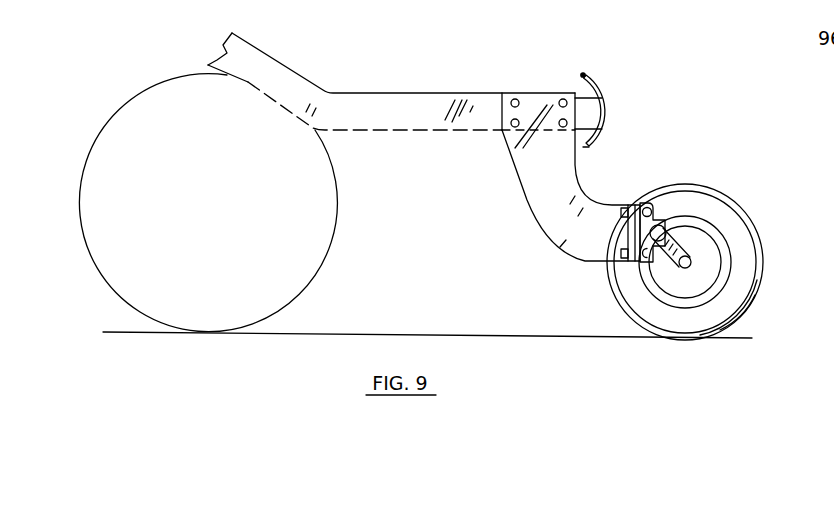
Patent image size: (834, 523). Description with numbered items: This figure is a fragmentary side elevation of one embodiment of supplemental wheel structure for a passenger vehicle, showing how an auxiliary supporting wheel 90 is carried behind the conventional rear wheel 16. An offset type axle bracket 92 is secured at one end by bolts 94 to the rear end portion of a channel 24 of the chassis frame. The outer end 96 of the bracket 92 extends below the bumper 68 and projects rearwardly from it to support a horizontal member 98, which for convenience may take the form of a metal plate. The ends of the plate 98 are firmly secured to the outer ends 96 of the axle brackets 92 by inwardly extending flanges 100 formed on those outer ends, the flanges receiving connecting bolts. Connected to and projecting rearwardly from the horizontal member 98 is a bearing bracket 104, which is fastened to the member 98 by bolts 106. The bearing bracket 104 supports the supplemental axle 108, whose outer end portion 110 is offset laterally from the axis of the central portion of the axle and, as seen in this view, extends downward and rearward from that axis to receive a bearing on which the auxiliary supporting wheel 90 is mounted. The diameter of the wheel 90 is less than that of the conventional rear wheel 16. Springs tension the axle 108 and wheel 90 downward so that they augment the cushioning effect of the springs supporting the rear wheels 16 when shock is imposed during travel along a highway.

The conventional rear wheels 16 is at (315, 280).
The channels 24 is at (382, 102).
The bumper 68 is at (595, 80).
The auxiliary supporting wheels 90 is at (655, 322).
The offset type axle brackets 92 is at (528, 182).
The bolts 94 is at (512, 98).
The outer ends 96 is at (560, 247).
The horizontal member 98 is at (645, 202).
The inwardly extending flanges 100 is at (632, 230).
The bearing brackets 104 is at (651, 218).
The bolts 106 is at (622, 208).
The supplemental axle 108 is at (672, 227).
The outer end portions 110 is at (688, 257).